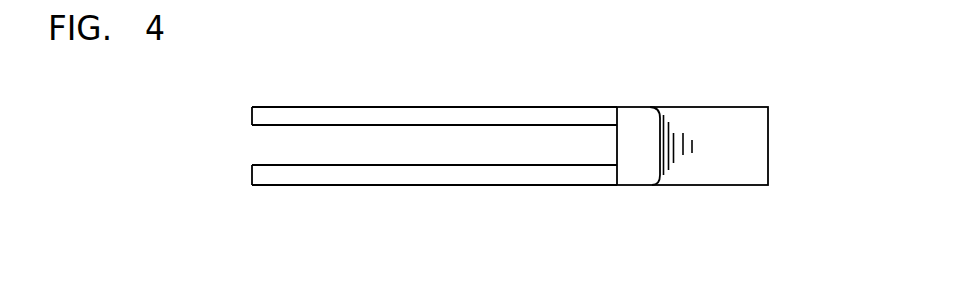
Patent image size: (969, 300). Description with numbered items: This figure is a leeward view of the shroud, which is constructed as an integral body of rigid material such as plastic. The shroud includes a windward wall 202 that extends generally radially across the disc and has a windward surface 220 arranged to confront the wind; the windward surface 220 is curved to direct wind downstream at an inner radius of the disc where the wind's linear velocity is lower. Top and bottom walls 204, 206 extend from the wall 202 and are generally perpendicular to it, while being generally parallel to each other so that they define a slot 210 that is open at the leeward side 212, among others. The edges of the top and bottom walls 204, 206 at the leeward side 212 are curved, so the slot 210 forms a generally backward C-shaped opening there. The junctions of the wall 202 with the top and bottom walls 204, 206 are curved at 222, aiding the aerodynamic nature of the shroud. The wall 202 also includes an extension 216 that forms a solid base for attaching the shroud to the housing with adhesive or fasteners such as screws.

The wall 202 is at (641, 196).
The top wall 204 is at (542, 108).
The bottom wall 206 is at (505, 186).
The slot 210 is at (258, 143).
The leeward side 212 is at (429, 116).
The extension 216 is at (760, 149).
The windward surface 220 is at (660, 143).
The curved junctions 222 is at (655, 110).